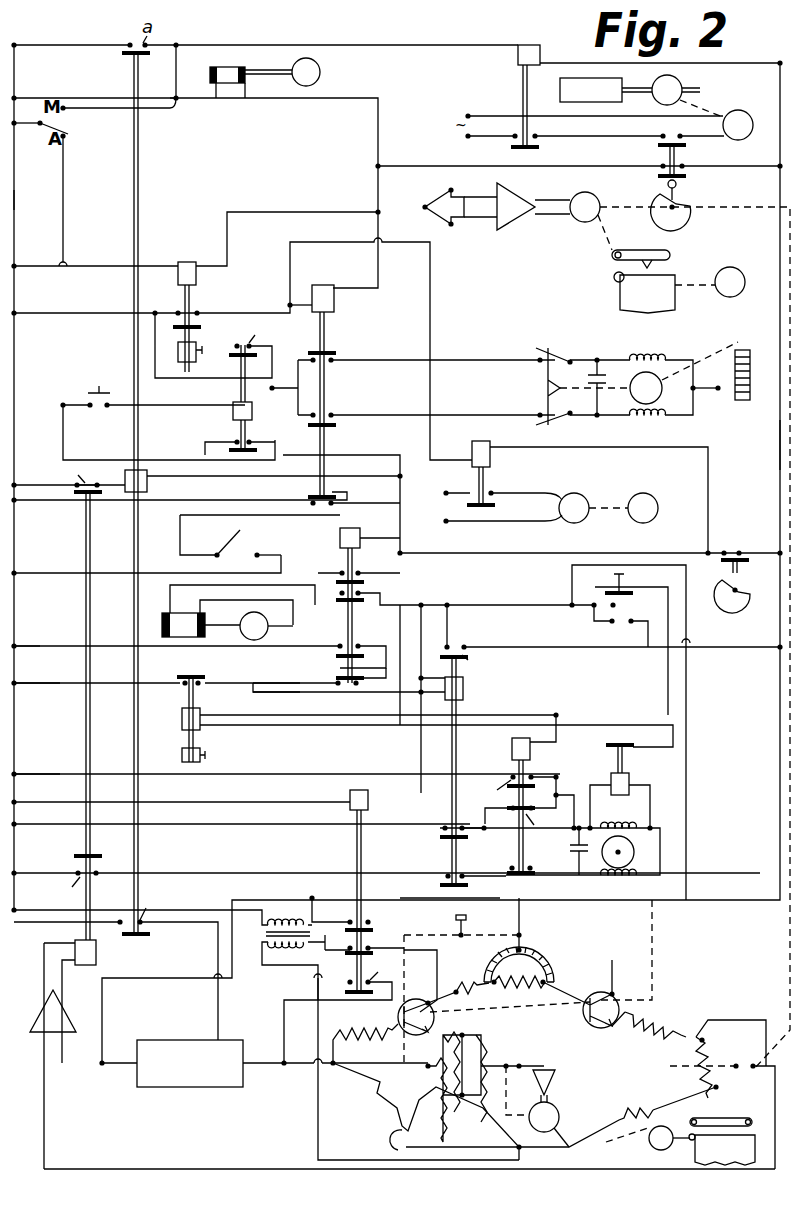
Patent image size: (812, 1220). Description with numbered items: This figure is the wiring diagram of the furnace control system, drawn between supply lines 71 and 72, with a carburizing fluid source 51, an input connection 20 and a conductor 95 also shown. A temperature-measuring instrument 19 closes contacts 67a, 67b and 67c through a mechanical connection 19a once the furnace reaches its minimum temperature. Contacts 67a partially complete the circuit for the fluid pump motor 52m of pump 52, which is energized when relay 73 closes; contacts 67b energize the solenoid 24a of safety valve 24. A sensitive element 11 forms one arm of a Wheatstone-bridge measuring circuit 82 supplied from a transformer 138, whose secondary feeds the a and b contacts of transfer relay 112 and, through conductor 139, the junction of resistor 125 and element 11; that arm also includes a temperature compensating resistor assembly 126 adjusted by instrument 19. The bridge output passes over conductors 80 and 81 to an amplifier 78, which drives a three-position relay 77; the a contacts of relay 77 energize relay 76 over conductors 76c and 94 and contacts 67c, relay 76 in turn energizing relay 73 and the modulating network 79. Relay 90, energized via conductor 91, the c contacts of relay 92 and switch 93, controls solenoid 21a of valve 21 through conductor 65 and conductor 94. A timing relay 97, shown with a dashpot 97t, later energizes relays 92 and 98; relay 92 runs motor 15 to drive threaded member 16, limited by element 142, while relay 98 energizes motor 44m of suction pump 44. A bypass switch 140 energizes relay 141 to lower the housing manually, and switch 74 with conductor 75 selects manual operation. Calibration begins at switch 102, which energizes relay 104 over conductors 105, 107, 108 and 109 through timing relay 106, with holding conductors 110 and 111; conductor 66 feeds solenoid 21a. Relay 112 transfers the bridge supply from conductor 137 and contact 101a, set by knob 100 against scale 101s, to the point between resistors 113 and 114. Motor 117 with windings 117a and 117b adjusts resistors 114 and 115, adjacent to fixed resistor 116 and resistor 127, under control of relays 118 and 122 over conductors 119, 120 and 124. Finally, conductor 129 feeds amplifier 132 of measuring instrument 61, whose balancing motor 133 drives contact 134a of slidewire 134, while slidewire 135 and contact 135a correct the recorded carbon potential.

The relay 73 is at (518, 46).
The fluid supply 51 is at (560, 90).
The pump 52 is at (682, 88).
The fluid pump motor 52m is at (748, 100).
The safety valve 24 is at (320, 76).
The solenoid 24a is at (232, 84).
The manual switch 74 is at (70, 126).
The conductor 75 is at (163, 110).
The supply line 71 is at (17, 205).
The conductor 95 is at (65, 218).
The timing relay 97 is at (188, 262).
The dashpot 97t is at (184, 364).
The relay 92 is at (333, 300).
The signal input 20 is at (436, 203).
The temperature-measuring instrument 19 is at (533, 246).
The mechanical connection 19a is at (720, 212).
The contacts 67a is at (676, 146).
The contacts 67b is at (688, 171).
The contacts 67c is at (733, 552).
The threaded member 16 is at (746, 355).
The limit switch actuating element 142 is at (545, 388).
The motor 15 is at (668, 443).
The supply line 72 is at (778, 440).
The bypass switch 140 is at (96, 410).
The relay 141 is at (233, 412).
The relay 98 is at (473, 452).
The motor 44m is at (575, 492).
The suction pump 44 is at (650, 499).
The relay 76 is at (127, 493).
The conductor 76c is at (190, 477).
The conductor 91 is at (37, 502).
The switch 93 is at (260, 536).
The relay 90 is at (340, 538).
The conductor 109 is at (410, 602).
The conductor 94 is at (473, 557).
The calibrating switch 102 is at (612, 577).
The conductor 110 is at (449, 631).
The conductor 111 is at (600, 650).
The solenoid 21a is at (162, 625).
The valve 21 is at (266, 632).
The conductor 65 is at (60, 645).
The conductor 66 is at (272, 683).
The conductor 105 is at (72, 684).
The relay 104 is at (463, 690).
The conductor 124 is at (590, 724).
The conductor 120 is at (630, 712).
The timing relay 106 is at (200, 722).
The conductor 107 is at (300, 694).
The conductor 108 is at (405, 678).
The relay 118 is at (512, 750).
The relay 122 is at (630, 786).
The conductor 119 is at (52, 774).
The motor 117 is at (640, 849).
The motor winding 117a is at (617, 816).
The motor winding 117b is at (621, 899).
The transfer relay 112 is at (356, 790).
The conductor 137 is at (405, 897).
The transformer 138 is at (268, 930).
The knob 100 is at (470, 918).
The contact 101a is at (522, 953).
The scale 101s is at (548, 964).
The measuring circuit 82 is at (722, 987).
The relay 77 is at (96, 954).
The amplifier 78 is at (48, 1010).
The modulating network 79 is at (216, 1088).
The conductor 80 is at (135, 1169).
The conductor 81 is at (300, 1064).
The conductor 139 is at (318, 1136).
The adjustable resistor 114 is at (404, 1030).
The resistor 113 is at (509, 993).
The adjustable resistor 115 is at (532, 994).
The fixed resistor 116 is at (663, 1028).
The conductor 129 is at (730, 1020).
The resistor 127 is at (366, 1028).
The slidewire 134 is at (450, 1052).
The contact 134a is at (482, 1062).
The slidewire 135 is at (453, 1079).
The contact 135a is at (442, 1083).
The amplifier 132 is at (555, 1078).
The temperature compensating resistor assembly 126 is at (704, 1083).
The resistor 125 is at (624, 1113).
The balancing motor 133 is at (530, 1123).
The sensitive element 11 is at (390, 1143).
The measuring instrument 61 is at (680, 1171).